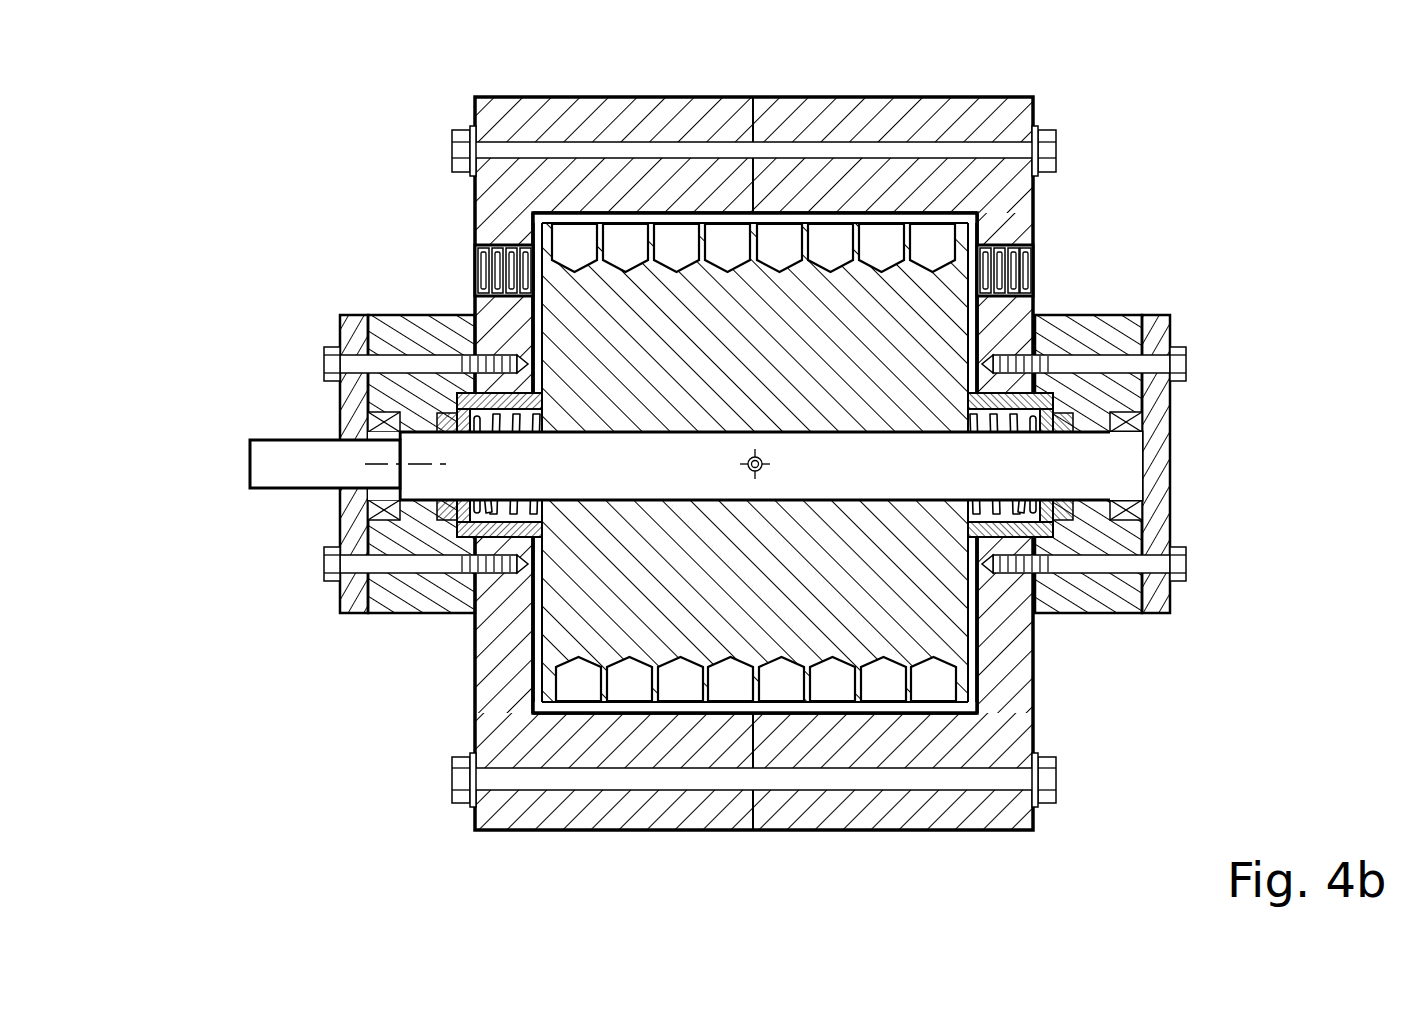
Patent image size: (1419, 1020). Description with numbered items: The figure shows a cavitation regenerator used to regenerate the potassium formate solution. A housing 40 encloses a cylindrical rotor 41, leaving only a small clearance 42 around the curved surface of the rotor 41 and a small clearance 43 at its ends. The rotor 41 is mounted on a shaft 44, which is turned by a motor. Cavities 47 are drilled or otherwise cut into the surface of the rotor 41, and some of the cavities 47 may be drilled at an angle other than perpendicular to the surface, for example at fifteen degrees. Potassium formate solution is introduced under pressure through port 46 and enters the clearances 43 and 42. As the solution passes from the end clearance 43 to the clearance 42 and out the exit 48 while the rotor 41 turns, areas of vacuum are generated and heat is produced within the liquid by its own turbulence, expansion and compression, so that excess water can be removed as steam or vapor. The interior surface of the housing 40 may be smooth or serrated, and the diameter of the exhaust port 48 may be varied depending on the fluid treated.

The housing 40 is at (527, 122).
The cylindrical rotor 41 is at (780, 358).
The clearance 42 is at (775, 215).
The clearance 43 is at (540, 633).
The shaft 44 is at (313, 472).
The port 46 is at (475, 270).
The cavities 47 is at (935, 245).
The exit 48 is at (1035, 270).